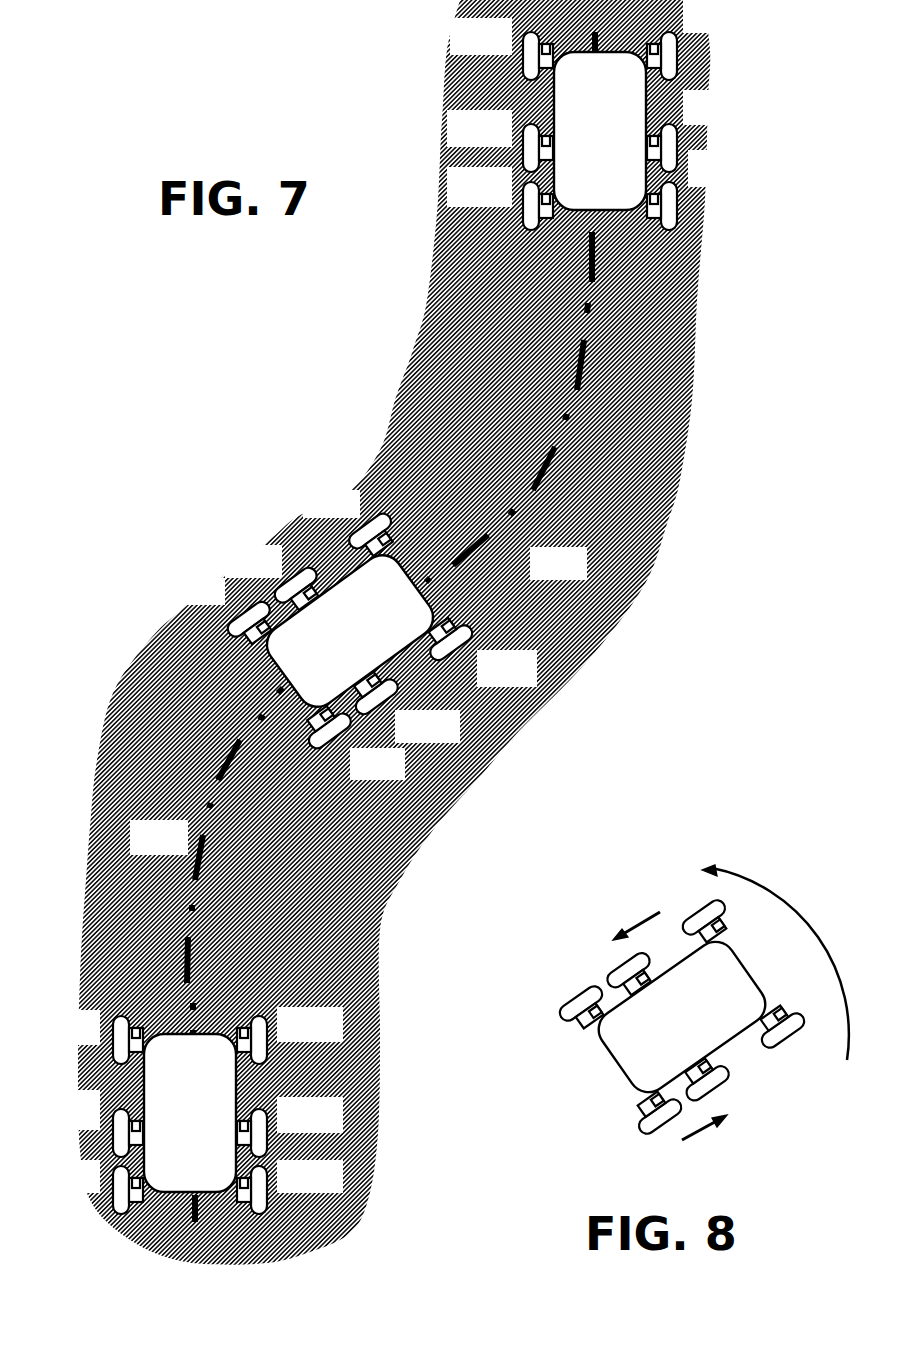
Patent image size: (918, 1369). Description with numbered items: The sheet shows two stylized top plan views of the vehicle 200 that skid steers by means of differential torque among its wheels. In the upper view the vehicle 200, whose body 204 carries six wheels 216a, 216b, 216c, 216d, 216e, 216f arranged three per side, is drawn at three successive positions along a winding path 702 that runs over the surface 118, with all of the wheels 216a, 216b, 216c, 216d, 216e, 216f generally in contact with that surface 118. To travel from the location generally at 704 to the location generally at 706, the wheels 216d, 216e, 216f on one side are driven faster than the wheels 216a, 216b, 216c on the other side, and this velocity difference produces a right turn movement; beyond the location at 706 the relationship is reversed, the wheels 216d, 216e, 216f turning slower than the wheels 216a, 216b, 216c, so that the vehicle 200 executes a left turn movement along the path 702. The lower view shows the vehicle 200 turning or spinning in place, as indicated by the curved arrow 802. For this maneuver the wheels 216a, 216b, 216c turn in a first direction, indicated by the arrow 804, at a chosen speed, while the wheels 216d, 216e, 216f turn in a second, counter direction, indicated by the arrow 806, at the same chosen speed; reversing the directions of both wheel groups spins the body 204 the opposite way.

In FIG. 7, the surface 118 is at (362, 632).
In FIG. 7, the robotic vehicle 200 is at (377, 634).
In FIG. 8, the robotic vehicle 200 is at (655, 1026).
In FIG. 8, the vehicle body 204 is at (700, 1028).
In FIG. 8, the wheel 216a is at (636, 1133).
In FIG. 8, the wheel 216b is at (733, 1090).
In FIG. 8, the wheel 216c is at (807, 1007).
In FIG. 8, the wheel 216d is at (585, 1009).
In FIG. 8, the wheel 216e is at (607, 968).
In FIG. 8, the wheel 216f is at (697, 903).
In FIG. 7, the path 702 is at (190, 850).
In FIG. 7, the location 704 is at (88, 1231).
In FIG. 7, the location 706 is at (362, 632).
In FIG. 8, the arrow 802 is at (795, 903).
In FIG. 8, the arrow 804 is at (705, 1130).
In FIG. 8, the arrow 806 is at (633, 925).